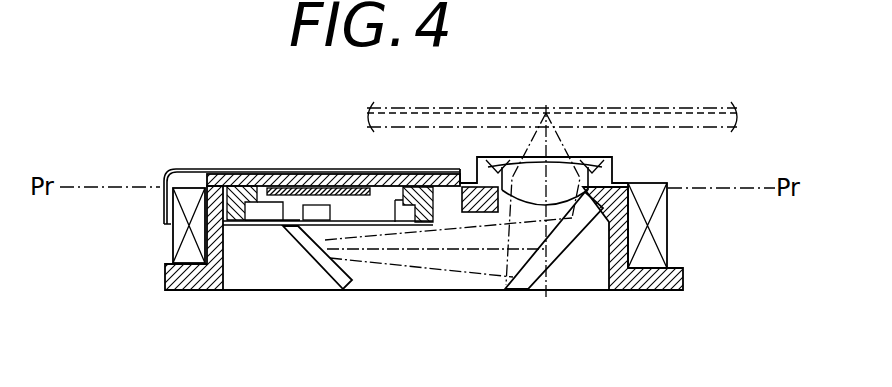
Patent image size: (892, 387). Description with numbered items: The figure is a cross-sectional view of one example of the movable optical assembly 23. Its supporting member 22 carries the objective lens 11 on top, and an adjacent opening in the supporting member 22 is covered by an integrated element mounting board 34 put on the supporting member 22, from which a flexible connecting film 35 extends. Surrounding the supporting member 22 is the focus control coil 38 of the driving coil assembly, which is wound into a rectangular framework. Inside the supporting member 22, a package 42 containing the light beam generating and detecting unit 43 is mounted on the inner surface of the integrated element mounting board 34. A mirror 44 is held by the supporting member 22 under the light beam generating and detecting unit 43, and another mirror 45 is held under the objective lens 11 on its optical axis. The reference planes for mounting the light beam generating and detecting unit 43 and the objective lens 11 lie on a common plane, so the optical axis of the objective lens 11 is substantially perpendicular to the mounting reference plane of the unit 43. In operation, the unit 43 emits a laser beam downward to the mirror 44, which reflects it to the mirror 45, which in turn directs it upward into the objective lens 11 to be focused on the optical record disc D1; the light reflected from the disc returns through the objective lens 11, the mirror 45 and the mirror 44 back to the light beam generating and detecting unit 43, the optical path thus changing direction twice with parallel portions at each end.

The objective lens 11 is at (517, 157).
The optical disc D1 is at (633, 107).
The supporting member 22 is at (648, 284).
The movable optical assembly 23 is at (318, 150).
The integrated element mounting board 34 is at (253, 175).
The flexible connecting film 35 is at (190, 167).
The focus control coil 38 is at (175, 240).
The package 42 is at (253, 228).
The light beam generating and detecting unit 43 is at (383, 186).
The mirror 44 is at (330, 270).
The mirror 45 is at (537, 272).